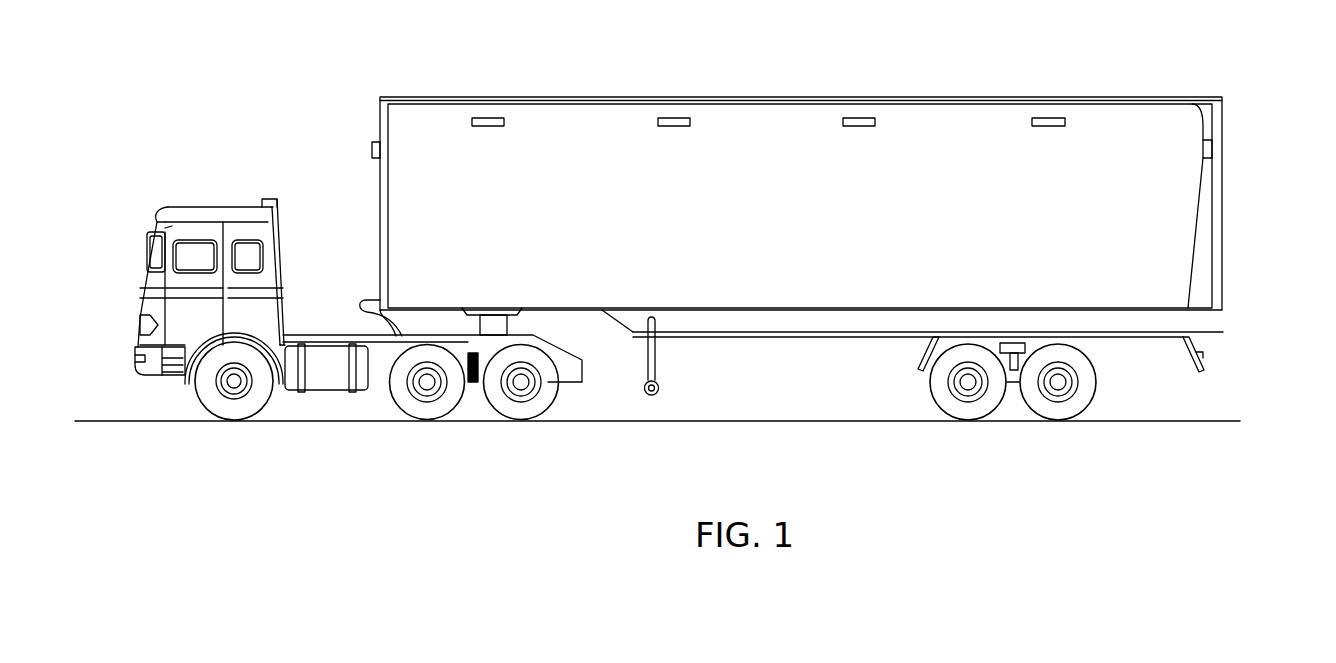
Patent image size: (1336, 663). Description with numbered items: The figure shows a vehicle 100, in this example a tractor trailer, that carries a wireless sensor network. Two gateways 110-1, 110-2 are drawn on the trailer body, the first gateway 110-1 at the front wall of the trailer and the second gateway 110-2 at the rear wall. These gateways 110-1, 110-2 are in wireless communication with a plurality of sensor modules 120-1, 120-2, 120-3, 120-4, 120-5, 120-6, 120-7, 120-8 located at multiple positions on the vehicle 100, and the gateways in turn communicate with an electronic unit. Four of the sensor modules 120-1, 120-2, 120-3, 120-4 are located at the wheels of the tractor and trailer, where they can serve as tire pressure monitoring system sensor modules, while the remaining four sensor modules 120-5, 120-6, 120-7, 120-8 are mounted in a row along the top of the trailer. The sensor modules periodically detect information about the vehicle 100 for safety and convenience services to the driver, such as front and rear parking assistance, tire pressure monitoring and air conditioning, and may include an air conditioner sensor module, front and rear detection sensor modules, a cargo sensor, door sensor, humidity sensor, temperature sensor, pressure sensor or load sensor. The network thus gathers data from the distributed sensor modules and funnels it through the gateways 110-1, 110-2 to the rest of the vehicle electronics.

The vehicle 100 is at (162, 165).
The gateway 110-1 is at (361, 149).
The gateway 110-2 is at (1236, 148).
The sensor module 120-1 is at (427, 435).
The sensor module 120-2 is at (521, 435).
The sensor module 120-3 is at (968, 435).
The sensor module 120-4 is at (1058, 435).
The sensor module 120-5 is at (482, 87).
The sensor module 120-6 is at (669, 87).
The sensor module 120-7 is at (855, 87).
The sensor module 120-8 is at (1043, 87).